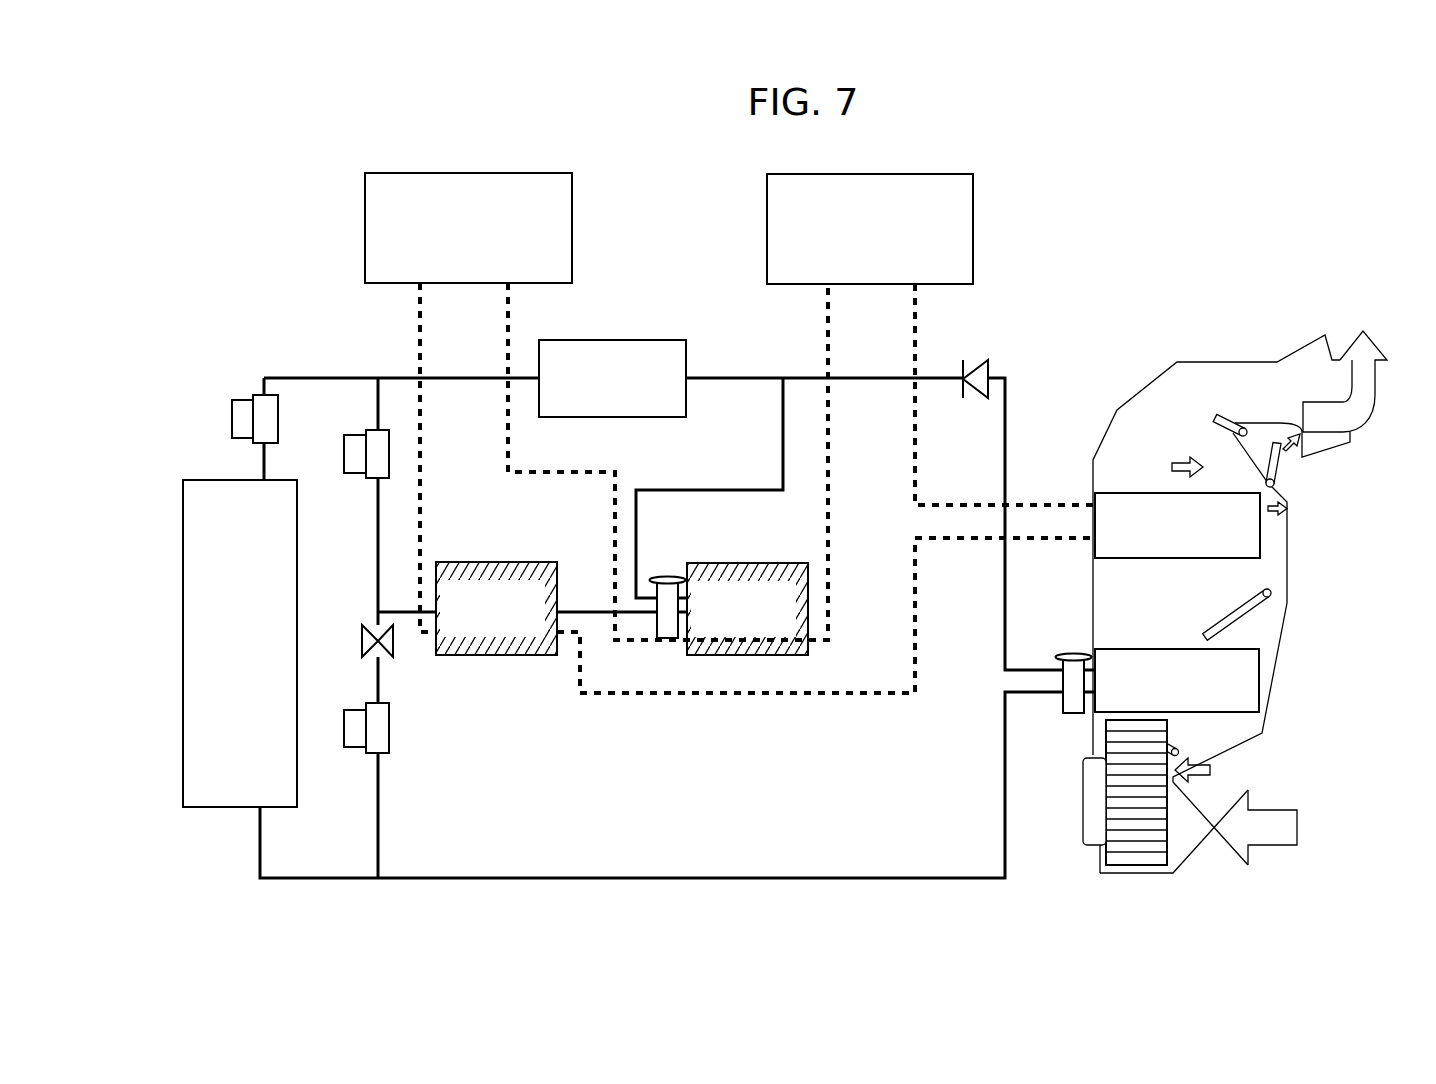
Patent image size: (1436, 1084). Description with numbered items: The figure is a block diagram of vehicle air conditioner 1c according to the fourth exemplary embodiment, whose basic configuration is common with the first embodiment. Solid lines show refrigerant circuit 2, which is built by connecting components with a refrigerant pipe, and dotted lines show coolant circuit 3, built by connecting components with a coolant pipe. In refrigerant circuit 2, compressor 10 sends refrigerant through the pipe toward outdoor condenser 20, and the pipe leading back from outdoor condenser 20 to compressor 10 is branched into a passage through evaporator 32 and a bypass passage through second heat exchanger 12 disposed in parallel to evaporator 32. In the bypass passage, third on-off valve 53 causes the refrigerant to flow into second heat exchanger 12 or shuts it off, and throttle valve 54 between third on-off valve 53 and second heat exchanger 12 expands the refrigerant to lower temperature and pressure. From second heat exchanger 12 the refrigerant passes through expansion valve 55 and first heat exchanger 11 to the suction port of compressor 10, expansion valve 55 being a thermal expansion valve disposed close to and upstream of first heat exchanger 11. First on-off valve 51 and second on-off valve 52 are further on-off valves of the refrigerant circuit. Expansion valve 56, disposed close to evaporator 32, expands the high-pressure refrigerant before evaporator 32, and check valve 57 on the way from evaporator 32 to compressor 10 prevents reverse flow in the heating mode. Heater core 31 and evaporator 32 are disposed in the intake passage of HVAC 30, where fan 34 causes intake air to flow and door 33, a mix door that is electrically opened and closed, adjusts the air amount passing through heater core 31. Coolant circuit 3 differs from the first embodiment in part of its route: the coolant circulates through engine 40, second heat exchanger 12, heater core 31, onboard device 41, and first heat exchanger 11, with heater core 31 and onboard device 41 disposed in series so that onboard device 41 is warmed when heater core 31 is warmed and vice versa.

The vehicle air conditioner 1c is at (1074, 214).
The refrigerant circuit 2 is at (306, 368).
The coolant circuit 3 is at (850, 695).
The compressor 10 is at (617, 340).
The first heat exchanger 11 is at (748, 562).
The second heat exchanger 12 is at (498, 562).
The outdoor condenser 20 is at (297, 525).
The HVAC 30 is at (1291, 487).
The heater core 31 is at (1262, 535).
The evaporator 32 is at (1262, 678).
The door 33 is at (1255, 617).
The fan 34 is at (1136, 866).
The engine 40 is at (572, 230).
The onboard device 41 is at (973, 230).
The first on-off valve 51 is at (244, 396).
The second on-off valve 52 is at (358, 431).
The third on-off valve 53 is at (389, 725).
The throttle valve 54 is at (362, 641).
The expansion valve 55 is at (666, 577).
The expansion valve 56 is at (1072, 655).
The check valve 57 is at (978, 362).